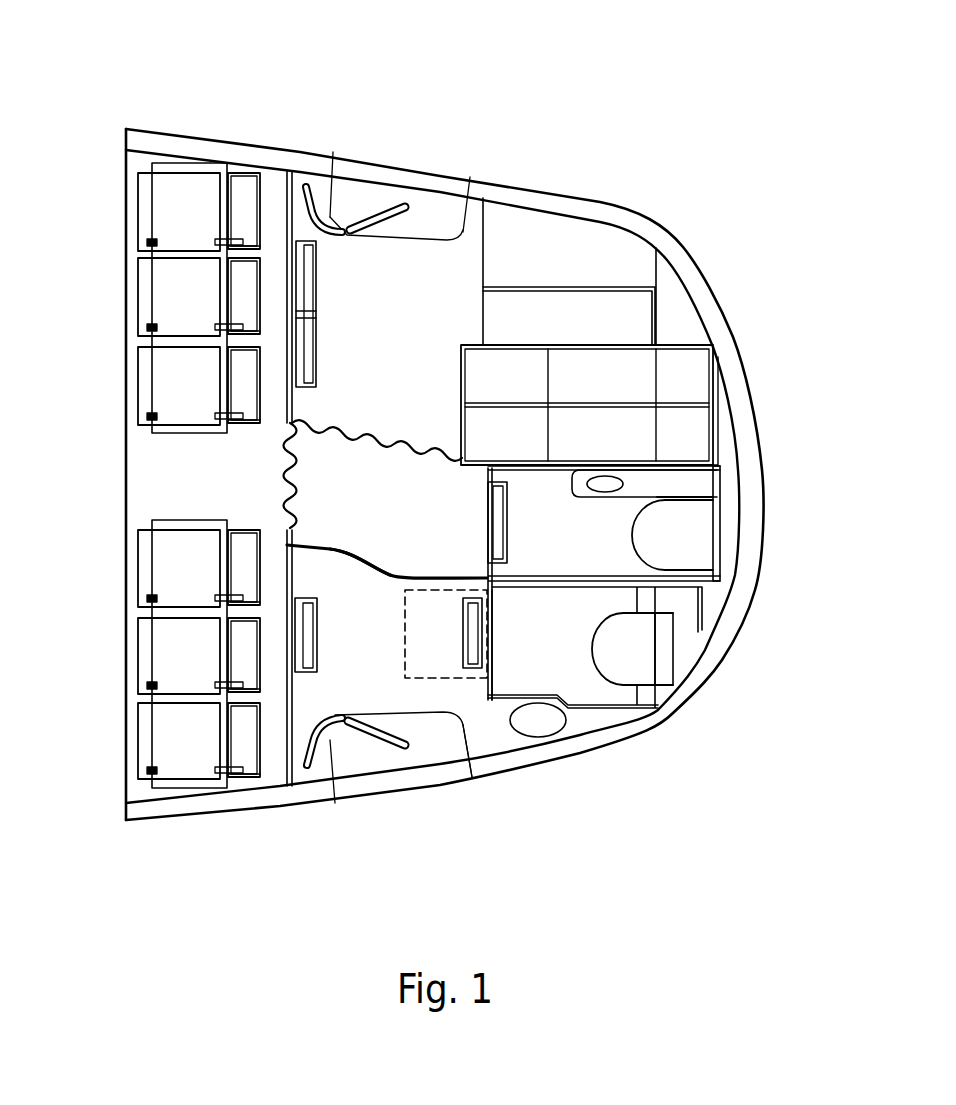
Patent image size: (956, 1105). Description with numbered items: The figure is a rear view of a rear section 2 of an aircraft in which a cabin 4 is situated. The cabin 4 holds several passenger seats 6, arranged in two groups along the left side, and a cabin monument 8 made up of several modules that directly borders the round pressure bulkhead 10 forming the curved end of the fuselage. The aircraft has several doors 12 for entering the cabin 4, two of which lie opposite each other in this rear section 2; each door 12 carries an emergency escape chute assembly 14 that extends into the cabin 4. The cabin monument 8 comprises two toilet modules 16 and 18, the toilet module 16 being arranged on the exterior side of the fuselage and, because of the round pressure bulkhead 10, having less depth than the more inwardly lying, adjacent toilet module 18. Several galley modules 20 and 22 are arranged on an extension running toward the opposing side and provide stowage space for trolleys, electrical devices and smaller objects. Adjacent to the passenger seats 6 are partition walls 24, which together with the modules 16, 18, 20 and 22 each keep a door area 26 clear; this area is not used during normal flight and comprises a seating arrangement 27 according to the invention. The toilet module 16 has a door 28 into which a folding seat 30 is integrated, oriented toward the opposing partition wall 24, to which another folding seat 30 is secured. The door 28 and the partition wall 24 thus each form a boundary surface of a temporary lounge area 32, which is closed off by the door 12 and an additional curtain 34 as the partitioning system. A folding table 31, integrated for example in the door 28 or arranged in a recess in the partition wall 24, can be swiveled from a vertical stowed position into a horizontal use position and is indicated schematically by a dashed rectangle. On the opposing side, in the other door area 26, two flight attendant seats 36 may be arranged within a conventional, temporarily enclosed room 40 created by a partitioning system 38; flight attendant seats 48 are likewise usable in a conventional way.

The rear section 2 is at (651, 206).
The cabin 4 is at (146, 465).
The passenger seats 6 is at (188, 224).
The cabin monument 8 is at (686, 314).
The pressure bulkhead 10 is at (730, 473).
The doors 12 is at (424, 160).
The emergency escape chute assembly 14 is at (454, 227).
The toilet module 16 is at (561, 667).
The toilet module 18 is at (580, 552).
The galley module 20 is at (613, 445).
The galley module 22 is at (582, 282).
The partition walls 24 is at (285, 410).
The door area 26 is at (380, 252).
The seating arrangement 27 is at (474, 710).
The door 28 is at (499, 612).
The folding seat 30 is at (300, 627).
The folding table 31 is at (436, 606).
The temporary lounge area 32 is at (389, 597).
The curtain 34 is at (300, 545).
The flight attendant seats 36 is at (299, 262).
The partitioning system 38 is at (428, 452).
The temporarily enclosed room 40 is at (454, 358).
The flight attendant seats 48 is at (507, 488).